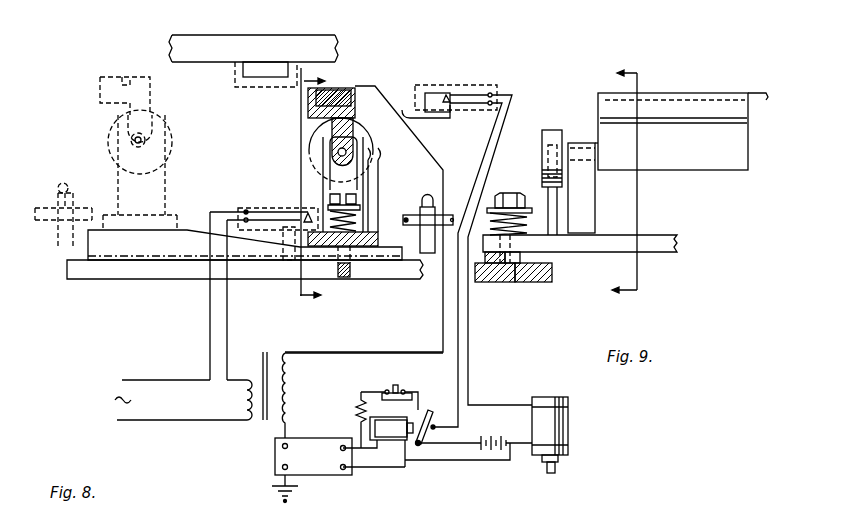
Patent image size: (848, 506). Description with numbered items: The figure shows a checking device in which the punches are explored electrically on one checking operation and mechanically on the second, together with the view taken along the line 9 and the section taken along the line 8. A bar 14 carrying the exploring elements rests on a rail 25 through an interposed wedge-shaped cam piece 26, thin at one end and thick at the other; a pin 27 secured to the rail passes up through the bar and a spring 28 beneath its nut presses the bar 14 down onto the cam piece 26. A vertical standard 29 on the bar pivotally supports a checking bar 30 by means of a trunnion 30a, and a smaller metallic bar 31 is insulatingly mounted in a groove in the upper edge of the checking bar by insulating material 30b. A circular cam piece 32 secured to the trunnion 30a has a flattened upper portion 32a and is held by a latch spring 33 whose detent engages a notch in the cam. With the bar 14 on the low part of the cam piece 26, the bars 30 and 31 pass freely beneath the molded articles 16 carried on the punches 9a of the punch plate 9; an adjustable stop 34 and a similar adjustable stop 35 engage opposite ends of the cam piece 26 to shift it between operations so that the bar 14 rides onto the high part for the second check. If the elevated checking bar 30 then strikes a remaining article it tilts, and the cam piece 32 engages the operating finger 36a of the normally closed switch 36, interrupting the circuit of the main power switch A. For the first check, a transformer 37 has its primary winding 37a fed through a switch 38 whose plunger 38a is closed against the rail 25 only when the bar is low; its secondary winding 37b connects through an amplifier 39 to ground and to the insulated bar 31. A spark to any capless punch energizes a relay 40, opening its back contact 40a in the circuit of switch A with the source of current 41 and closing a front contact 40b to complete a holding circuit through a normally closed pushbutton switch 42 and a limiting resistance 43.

In FIG. 9, the section line 8— 8 is at (626, 181).
In FIG. 8, the punch plate 9 is at (223, 41).
In FIG. 8, the punch 9a is at (270, 66).
In FIG. 8, the bar 14 is at (374, 250).
In FIG. 9, the bar 14 is at (678, 250).
In FIG. 8, the molded article 16 is at (266, 85).
In FIG. 8, the rail 25 is at (100, 272).
In FIG. 9, the rail 25 is at (543, 282).
In FIG. 8, the wedge-shaped cam piece 26 is at (158, 247).
In FIG. 9, the wedge-shaped cam piece 26 is at (493, 282).
In FIG. 8, the pin 27 is at (340, 250).
In FIG. 9, the pin 27 is at (522, 260).
In FIG. 8, the spring 28 is at (368, 213).
In FIG. 9, the spring 28 is at (533, 215).
In FIG. 8, the vertical standard 29 is at (323, 190).
In FIG. 9, the vertical standard 29 is at (592, 216).
In FIG. 8, the checking bar 30 is at (356, 126).
In FIG. 9, the checking bar 30 is at (683, 167).
In FIG. 9, the trunnion 30a is at (597, 155).
In FIG. 8, the insulating material 30b is at (323, 88).
In FIG. 8, the metallic bar 31 is at (334, 92).
In FIG. 9, the metallic bar 31 is at (689, 112).
In FIG. 8, the circular cam piece 32 is at (310, 157).
In FIG. 9, the circular cam piece 32 is at (542, 133).
In FIG. 8, the flattened upper portion 32a is at (330, 124).
In FIG. 8, the spring 33 is at (380, 172).
In FIG. 8, the adjustable stop 34 is at (437, 208).
In FIG. 8, the adjustable stop 35 is at (60, 227).
In FIG. 8, the switch 36 is at (455, 87).
In FIG. 8, the operating finger 36a is at (435, 126).
In FIG. 8, the transformer 37 is at (265, 352).
In FIG. 8, the primary winding 37a is at (244, 398).
In FIG. 8, the secondary winding 37b is at (287, 375).
In FIG. 8, the switch 38 is at (253, 207).
In FIG. 8, the switch-operating plunger 38a is at (283, 250).
In FIG. 8, the amplifier 39 is at (312, 470).
In FIG. 8, the relay 40 is at (388, 437).
In FIG. 8, the back contact 40a is at (427, 440).
In FIG. 8, the front contact 40b is at (420, 408).
In FIG. 8, the source of current 41 is at (500, 428).
In FIG. 8, the pushbutton switch 42 is at (398, 385).
In FIG. 8, the limiting resistance 43 is at (355, 410).
In FIG. 8, the main power switch A is at (568, 425).